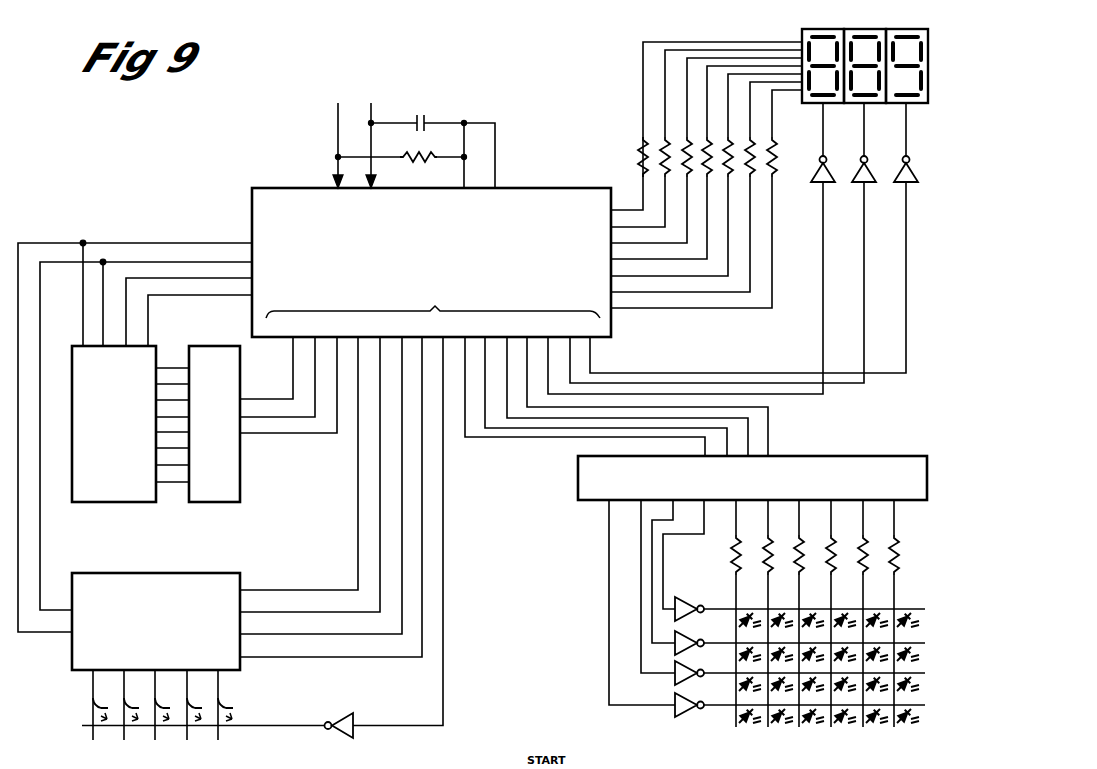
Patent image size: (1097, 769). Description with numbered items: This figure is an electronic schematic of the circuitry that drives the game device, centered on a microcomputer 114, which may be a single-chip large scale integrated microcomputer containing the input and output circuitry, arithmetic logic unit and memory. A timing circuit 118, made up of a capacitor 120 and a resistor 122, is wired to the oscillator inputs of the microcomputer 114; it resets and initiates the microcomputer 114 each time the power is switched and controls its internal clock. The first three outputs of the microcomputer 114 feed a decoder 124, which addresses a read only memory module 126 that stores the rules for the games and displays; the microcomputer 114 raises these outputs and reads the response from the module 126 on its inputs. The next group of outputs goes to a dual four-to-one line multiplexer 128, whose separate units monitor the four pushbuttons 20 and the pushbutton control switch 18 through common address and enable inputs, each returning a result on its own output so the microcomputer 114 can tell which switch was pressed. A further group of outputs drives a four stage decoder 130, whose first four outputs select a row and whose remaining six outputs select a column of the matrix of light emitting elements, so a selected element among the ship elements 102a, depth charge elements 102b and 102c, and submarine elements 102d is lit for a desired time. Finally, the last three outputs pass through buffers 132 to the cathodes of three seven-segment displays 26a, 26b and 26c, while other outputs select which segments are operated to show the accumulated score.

The microcomputer 114 is at (542, 208).
The timing circuit 118 is at (394, 112).
The capacitor 120 is at (427, 120).
The resistor 122 is at (426, 163).
The decoder 124 is at (222, 494).
The read only memory module 126 is at (105, 492).
The multiplexer 128 is at (130, 590).
The four stage decoder 130 is at (580, 476).
The buffers 132 is at (895, 181).
The seven-segment alpha-numeric display 26a is at (829, 29).
The seven-segment alpha-numeric display 26b is at (879, 29).
The seven-segment alpha-numeric display 26c is at (897, 29).
The light emitting element 102a is at (775, 614).
The light emitting element 102b is at (743, 647).
The light emitting element 102c is at (744, 710).
The light emitting element 102d is at (840, 728).
The pushbutton control switch 18 is at (203, 719).
The pushbuttons 20 is at (112, 726).